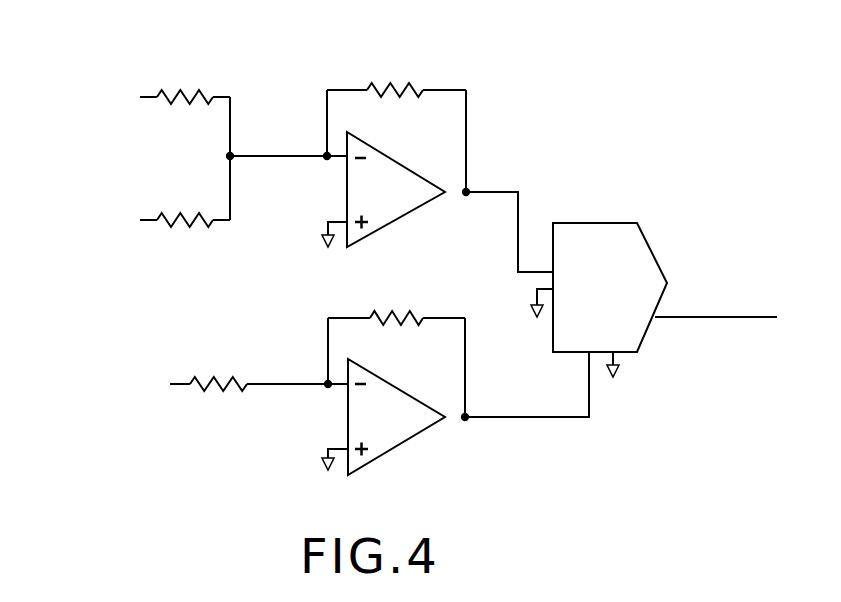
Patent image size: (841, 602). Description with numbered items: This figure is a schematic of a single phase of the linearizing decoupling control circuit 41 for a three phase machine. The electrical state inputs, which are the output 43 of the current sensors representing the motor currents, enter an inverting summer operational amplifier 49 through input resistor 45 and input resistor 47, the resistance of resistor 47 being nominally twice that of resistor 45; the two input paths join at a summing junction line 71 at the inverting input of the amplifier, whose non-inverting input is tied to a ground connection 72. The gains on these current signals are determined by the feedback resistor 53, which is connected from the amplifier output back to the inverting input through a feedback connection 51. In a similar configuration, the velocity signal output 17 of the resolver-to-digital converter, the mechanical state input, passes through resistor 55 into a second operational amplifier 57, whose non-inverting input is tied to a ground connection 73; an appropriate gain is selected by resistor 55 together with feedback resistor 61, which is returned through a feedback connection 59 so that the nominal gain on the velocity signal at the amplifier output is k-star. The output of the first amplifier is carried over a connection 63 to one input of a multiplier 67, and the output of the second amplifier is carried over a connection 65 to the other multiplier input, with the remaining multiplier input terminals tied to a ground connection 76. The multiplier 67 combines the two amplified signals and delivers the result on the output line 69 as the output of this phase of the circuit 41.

The linearizing decoupling control circuit 41 is at (646, 119).
The output of sensors 43 is at (139, 158).
The input resistor 45 is at (183, 223).
The input resistor 47 is at (188, 62).
The inverting summer operational amplifier 49 is at (398, 215).
The feedback connection 51 is at (466, 105).
The feedback resistor 53 is at (397, 53).
The resistor 55 is at (208, 347).
The amplifier 57 is at (393, 440).
The output of the operational amplifier 59 is at (466, 367).
The resistor 61 is at (412, 282).
The connection to multiplier input +a 63 is at (518, 203).
The connection to multiplier input +b 65 is at (540, 419).
The multiplier 67 is at (634, 228).
The output line 69 is at (767, 311).
The summing junction line 71 is at (268, 154).
The ground connection 72 is at (327, 222).
The ground connection 73 is at (327, 450).
The ground connection 76 is at (619, 373).
The second output of the resolver-to-digital converter 17 is at (97, 387).